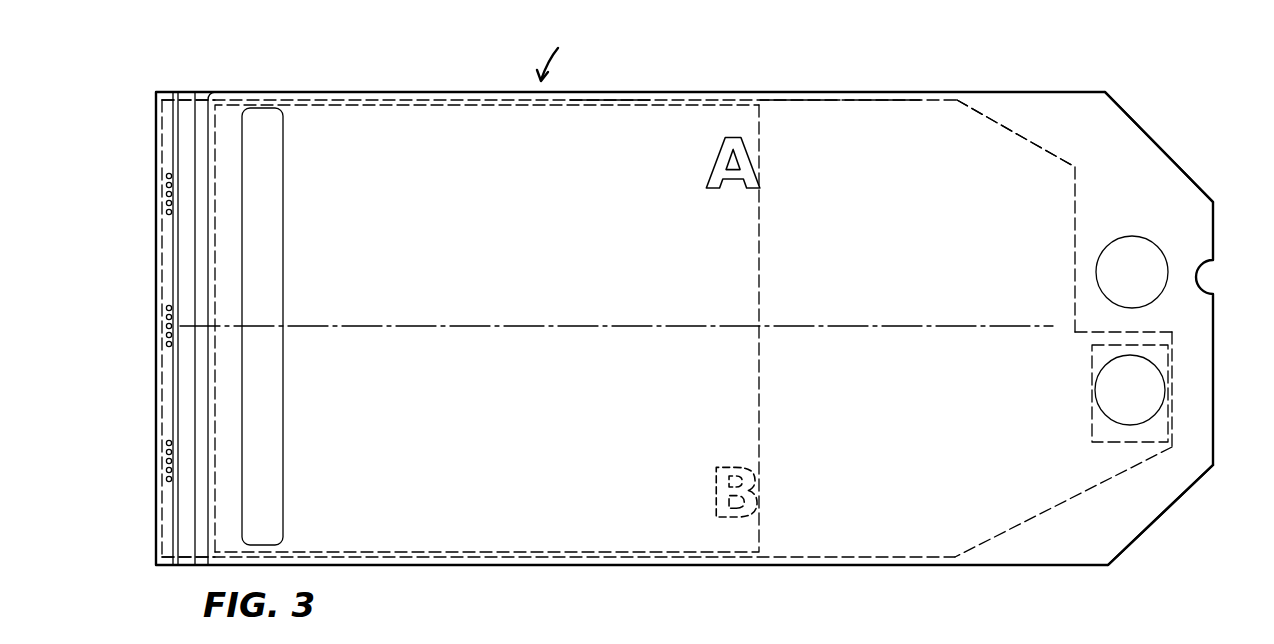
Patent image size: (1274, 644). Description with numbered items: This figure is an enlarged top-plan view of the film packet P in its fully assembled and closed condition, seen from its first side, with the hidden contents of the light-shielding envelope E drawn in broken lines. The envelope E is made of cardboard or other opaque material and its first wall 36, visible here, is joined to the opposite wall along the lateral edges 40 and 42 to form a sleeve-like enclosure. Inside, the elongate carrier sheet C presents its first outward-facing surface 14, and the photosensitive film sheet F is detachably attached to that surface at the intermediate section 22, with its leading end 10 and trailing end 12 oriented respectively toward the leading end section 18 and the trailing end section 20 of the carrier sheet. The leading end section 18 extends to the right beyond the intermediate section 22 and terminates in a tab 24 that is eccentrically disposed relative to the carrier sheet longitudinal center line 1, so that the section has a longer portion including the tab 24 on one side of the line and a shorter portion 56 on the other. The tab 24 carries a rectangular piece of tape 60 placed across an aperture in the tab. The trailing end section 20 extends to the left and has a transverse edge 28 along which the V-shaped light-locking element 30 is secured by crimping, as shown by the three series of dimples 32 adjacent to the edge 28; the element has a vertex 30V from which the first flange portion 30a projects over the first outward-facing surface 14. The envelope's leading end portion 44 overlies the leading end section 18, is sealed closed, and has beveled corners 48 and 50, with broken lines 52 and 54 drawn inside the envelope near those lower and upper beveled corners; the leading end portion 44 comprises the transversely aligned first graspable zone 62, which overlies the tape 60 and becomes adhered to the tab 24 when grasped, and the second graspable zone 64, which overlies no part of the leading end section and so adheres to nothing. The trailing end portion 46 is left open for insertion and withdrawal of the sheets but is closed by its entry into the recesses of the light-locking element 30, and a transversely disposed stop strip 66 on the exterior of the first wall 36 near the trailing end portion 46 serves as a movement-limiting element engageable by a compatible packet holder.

The longitudinal center line 1 is at (876, 328).
The leading end 10 is at (765, 262).
The trailing end 12 is at (216, 152).
The first outward-facing surface 14 is at (813, 130).
The leading end section 18 is at (880, 148).
The trailing end section 20 is at (182, 88).
The intermediate section 22 is at (410, 95).
The tab 24 is at (1142, 332).
The transverse edge 28 is at (158, 253).
The light-locking element 30 is at (157, 286).
The vertex 30V is at (157, 352).
The first flange portion 30a is at (185, 416).
The dimples 32 is at (163, 201).
The first wall 36 is at (528, 298).
The lateral edge 40 is at (608, 565).
The lateral edge 42 is at (705, 92).
The leading end portion 44 is at (1000, 105).
The trailing end portion 46 is at (214, 90).
The beveled corner 48 is at (1190, 483).
The beveled corner 50 is at (1148, 132).
The lower chamfer fold line 52 is at (1073, 497).
The upper chamfer flap 54 is at (1043, 140).
The shorter portion 56 is at (1038, 236).
The tape 60 is at (1118, 447).
The first graspable zone 62 is at (1152, 396).
The second graspable zone 64 is at (1150, 248).
The stop strip 66 is at (272, 282).
The photosensitive film sheet F is at (367, 143).
The light-shielding envelope E is at (482, 92).
The film packet P is at (572, 39).
The carrier sheet C is at (590, 100).